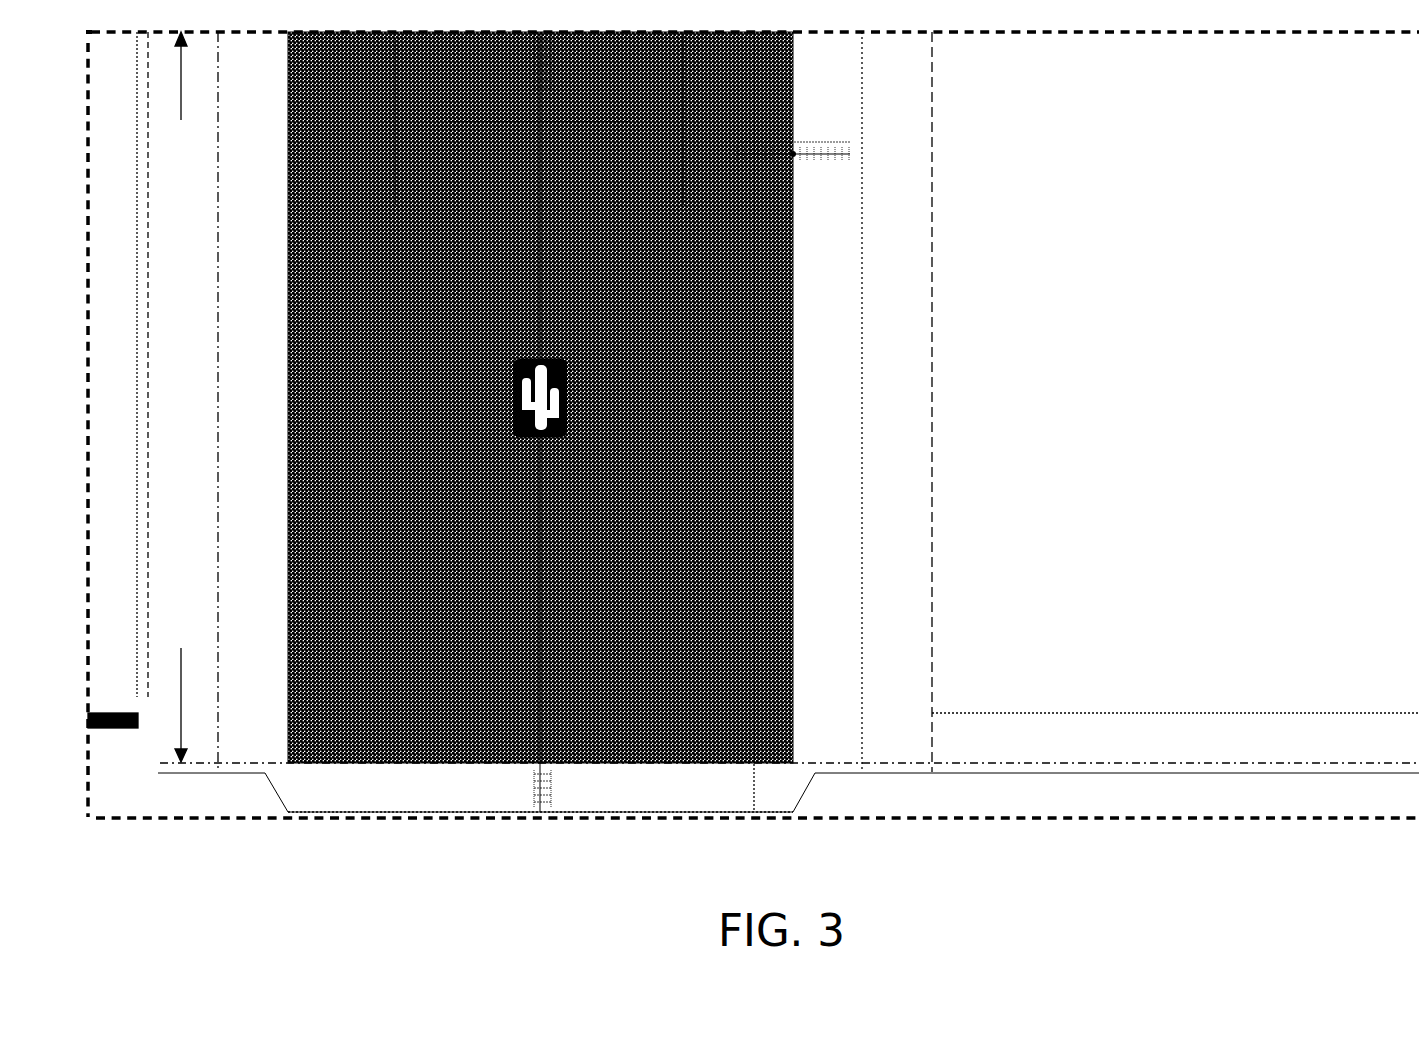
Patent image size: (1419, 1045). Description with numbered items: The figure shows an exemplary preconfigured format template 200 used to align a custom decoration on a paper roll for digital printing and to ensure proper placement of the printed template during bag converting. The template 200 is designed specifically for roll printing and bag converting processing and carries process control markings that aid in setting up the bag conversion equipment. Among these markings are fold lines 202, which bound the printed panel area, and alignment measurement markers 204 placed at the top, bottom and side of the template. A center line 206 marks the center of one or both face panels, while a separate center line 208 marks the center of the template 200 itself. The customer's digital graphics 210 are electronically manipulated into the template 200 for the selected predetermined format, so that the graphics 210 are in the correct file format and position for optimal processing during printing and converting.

The preconfigured format template 200 is at (380, 817).
The fold lines 202 is at (288, 350).
The alignment measurement markers 204 is at (525, 80).
The center line for face panel 206 is at (540, 545).
The center line for template 208 is at (757, 273).
The customer's digital graphics 210 is at (428, 492).